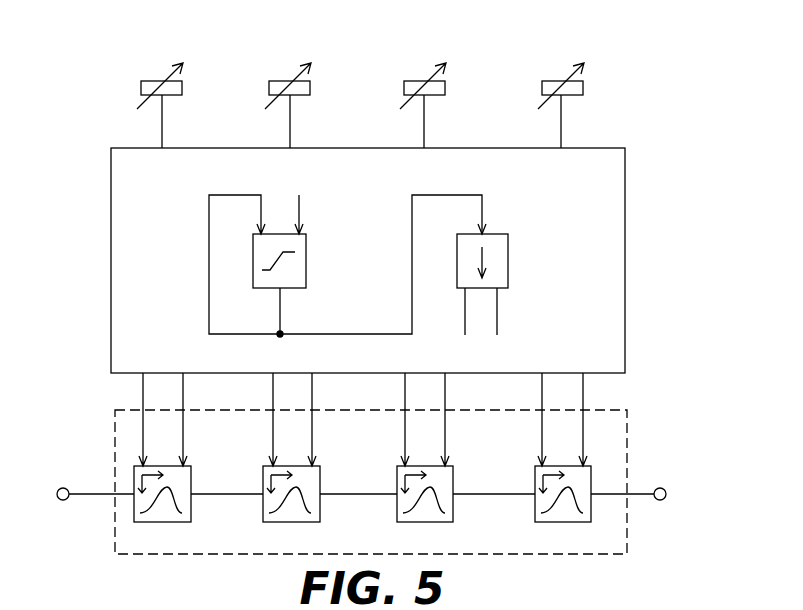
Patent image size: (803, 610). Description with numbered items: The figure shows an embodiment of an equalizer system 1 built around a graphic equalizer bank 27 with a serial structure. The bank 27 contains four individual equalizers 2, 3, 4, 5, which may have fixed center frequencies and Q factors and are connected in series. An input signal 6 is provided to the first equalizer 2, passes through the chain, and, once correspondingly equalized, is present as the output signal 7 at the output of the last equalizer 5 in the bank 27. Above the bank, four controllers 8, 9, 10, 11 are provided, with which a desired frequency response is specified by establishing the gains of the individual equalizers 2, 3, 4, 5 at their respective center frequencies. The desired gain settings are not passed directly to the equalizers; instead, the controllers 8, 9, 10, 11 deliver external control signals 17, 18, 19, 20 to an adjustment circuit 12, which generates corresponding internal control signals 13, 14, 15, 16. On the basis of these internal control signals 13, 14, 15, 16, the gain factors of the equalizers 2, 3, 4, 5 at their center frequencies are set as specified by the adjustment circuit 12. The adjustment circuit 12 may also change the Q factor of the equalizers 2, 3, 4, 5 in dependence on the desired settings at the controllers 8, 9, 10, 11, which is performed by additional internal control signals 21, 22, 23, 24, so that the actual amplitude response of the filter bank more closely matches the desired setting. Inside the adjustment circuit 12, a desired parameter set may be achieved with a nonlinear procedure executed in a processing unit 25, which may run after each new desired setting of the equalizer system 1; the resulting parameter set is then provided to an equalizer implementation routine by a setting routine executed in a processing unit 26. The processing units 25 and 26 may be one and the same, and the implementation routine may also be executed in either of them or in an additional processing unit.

The equalizer system 1 is at (655, 61).
The equalizer 2 is at (167, 522).
The equalizer 3 is at (307, 522).
The equalizer 4 is at (417, 522).
The equalizer 5 is at (553, 522).
The input signal 6 is at (58, 489).
The output signal 7 is at (665, 489).
The controller 8 is at (158, 80).
The controller 9 is at (285, 80).
The controller 10 is at (415, 80).
The controller 11 is at (549, 80).
The adjustment circuit 12 is at (636, 145).
The internal control signal 13 is at (143, 397).
The internal control signal 14 is at (273, 397).
The internal control signal 15 is at (405, 397).
The internal control signal 16 is at (542, 397).
The external control signal 17 is at (162, 128).
The external control signal 18 is at (290, 128).
The external control signal 19 is at (424, 128).
The external control signal 20 is at (561, 128).
The additional internal control signal 21 is at (183, 436).
The additional internal control signal 22 is at (312, 436).
The additional internal control signal 23 is at (445, 436).
The additional internal control signal 24 is at (583, 436).
The processing unit 25 is at (305, 234).
The processing unit 26 is at (507, 234).
The graphic equalizer bank 27 is at (640, 407).